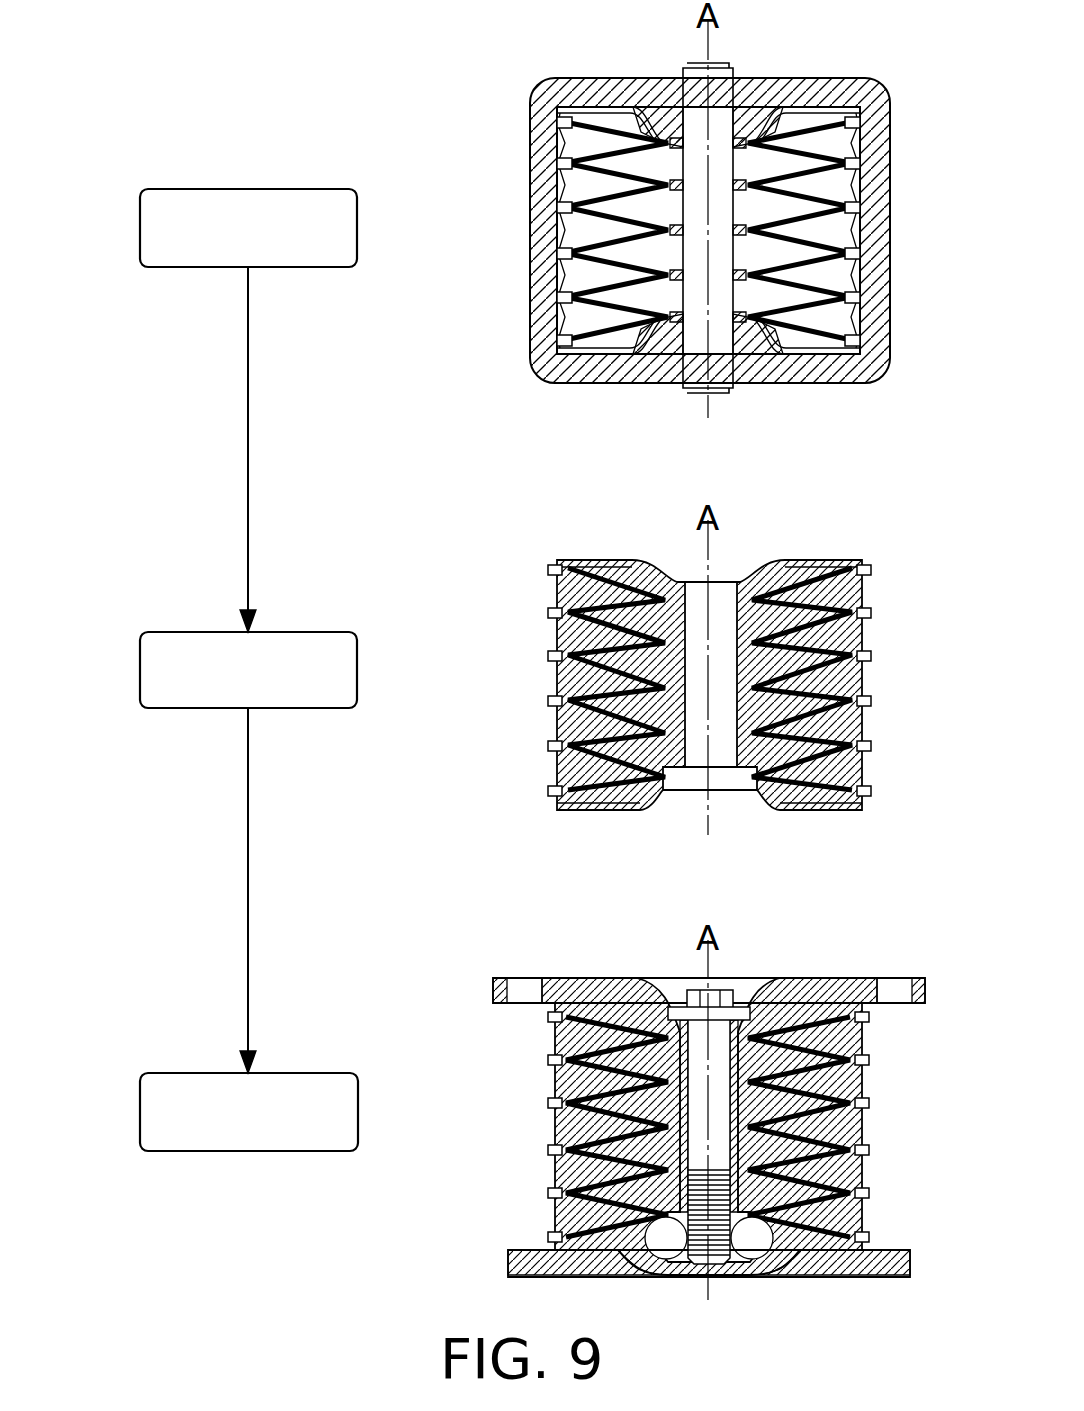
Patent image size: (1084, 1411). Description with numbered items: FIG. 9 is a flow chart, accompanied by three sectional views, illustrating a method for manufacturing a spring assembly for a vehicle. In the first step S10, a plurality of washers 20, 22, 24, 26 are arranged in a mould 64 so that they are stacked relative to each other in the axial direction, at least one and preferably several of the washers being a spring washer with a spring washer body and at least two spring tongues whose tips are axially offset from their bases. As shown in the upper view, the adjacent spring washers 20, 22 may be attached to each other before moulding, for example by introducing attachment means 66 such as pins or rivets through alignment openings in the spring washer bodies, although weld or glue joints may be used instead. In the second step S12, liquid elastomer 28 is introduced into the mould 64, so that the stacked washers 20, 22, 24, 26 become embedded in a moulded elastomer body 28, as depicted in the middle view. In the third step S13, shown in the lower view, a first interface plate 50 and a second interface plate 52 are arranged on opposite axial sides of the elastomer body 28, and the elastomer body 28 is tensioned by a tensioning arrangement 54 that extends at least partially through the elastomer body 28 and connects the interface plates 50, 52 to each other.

The spring washer 20 is at (815, 160).
The spring washer 22 is at (815, 190).
The spring washer 24 is at (815, 295).
The spring washer 26 is at (815, 335).
The elastomer body 28 is at (590, 600).
The first interface plate 50 is at (840, 978).
The second interface plate 52 is at (845, 1278).
The tensioning arrangement 54 is at (740, 1263).
The mould 64 is at (630, 78).
The attachment means 66 is at (558, 165).
The step of arranging washers in mould S10 is at (140, 228).
The step of introducing liquid elastomer S12 is at (140, 671).
The step of arranging interface plates and tensioning S13 is at (140, 1113).